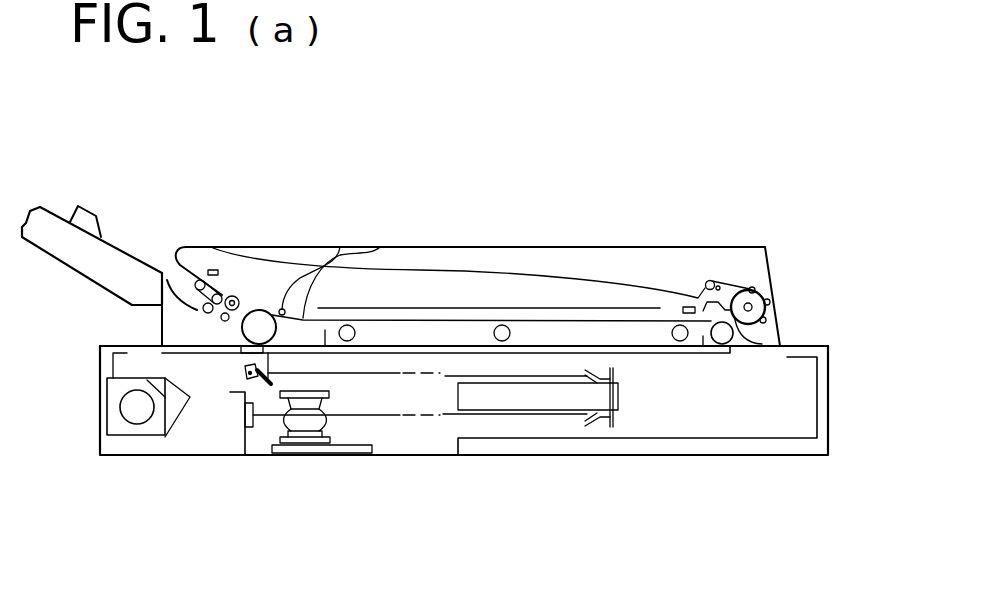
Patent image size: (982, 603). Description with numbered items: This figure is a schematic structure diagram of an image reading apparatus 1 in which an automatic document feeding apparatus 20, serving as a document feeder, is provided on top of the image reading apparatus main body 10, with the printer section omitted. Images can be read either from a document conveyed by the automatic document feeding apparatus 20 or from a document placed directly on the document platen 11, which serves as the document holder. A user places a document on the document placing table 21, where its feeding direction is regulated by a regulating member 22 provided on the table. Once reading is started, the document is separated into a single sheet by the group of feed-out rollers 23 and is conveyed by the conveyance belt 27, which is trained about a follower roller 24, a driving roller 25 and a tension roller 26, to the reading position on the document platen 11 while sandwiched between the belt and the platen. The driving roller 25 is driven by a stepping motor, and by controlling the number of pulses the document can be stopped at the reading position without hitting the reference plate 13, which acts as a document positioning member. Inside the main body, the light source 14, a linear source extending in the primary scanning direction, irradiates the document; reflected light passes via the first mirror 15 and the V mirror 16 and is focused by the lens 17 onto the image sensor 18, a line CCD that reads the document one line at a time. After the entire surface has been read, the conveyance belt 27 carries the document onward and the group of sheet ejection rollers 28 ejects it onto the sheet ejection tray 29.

The image reading apparatus 1 is at (779, 221).
The image reading apparatus main body 10 is at (829, 385).
The document platen 11 is at (703, 355).
The reference plate 13 is at (242, 347).
The light source 14 is at (243, 370).
The first mirror 15 is at (282, 438).
The V mirror 16 is at (613, 379).
The lens 17 is at (330, 427).
The image sensor 18 is at (263, 430).
The automatic document feeding apparatus 20 is at (540, 247).
The document placing table 21 is at (68, 255).
The regulating member 22 is at (92, 212).
The group of feed-out rollers 23 is at (226, 285).
The follower roller 24 is at (260, 311).
The driving roller 25 is at (682, 309).
The tension roller 26 is at (340, 247).
The conveyance belt 27 is at (380, 247).
The group of sheet ejection rollers 28 is at (737, 276).
The sheet ejection tray 29 is at (457, 270).